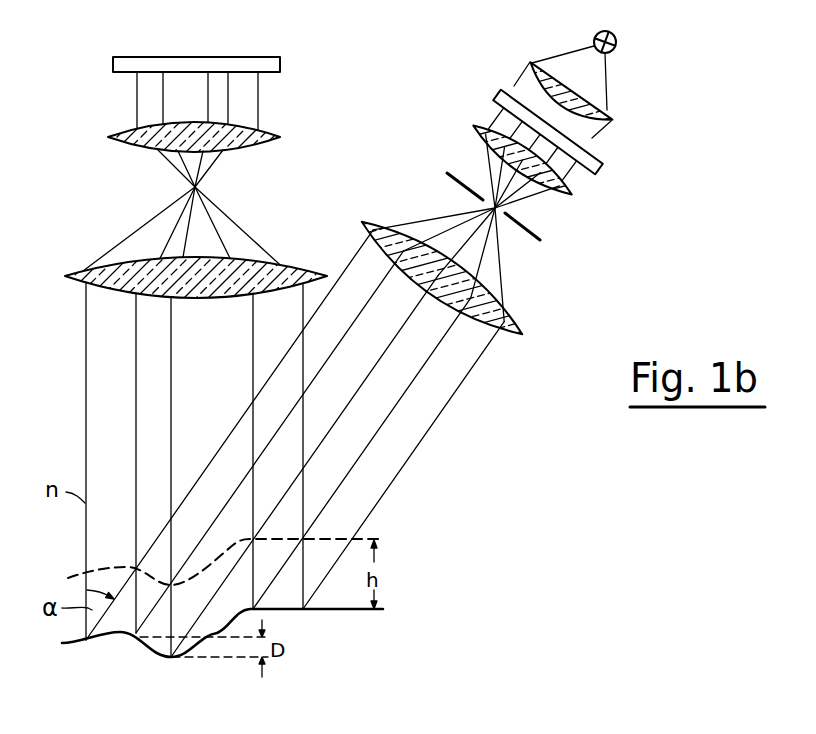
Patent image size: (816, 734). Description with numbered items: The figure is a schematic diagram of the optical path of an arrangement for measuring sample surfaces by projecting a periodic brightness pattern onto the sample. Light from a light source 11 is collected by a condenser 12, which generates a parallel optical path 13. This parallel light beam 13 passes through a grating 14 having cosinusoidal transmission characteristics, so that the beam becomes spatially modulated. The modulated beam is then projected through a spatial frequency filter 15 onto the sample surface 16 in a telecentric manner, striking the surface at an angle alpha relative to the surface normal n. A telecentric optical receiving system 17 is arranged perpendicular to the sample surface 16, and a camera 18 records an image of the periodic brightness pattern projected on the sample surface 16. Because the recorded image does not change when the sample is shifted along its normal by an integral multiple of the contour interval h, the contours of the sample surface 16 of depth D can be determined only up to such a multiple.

The light source 11 is at (617, 48).
The condenser 12 is at (613, 119).
The parallel optical path 13 is at (587, 133).
The grating 14 is at (580, 177).
The spatial frequency filter 15 is at (562, 190).
The sample surface 16 is at (337, 609).
The telecentric optical receiving system 17 is at (117, 139).
The camera 18 is at (281, 69).